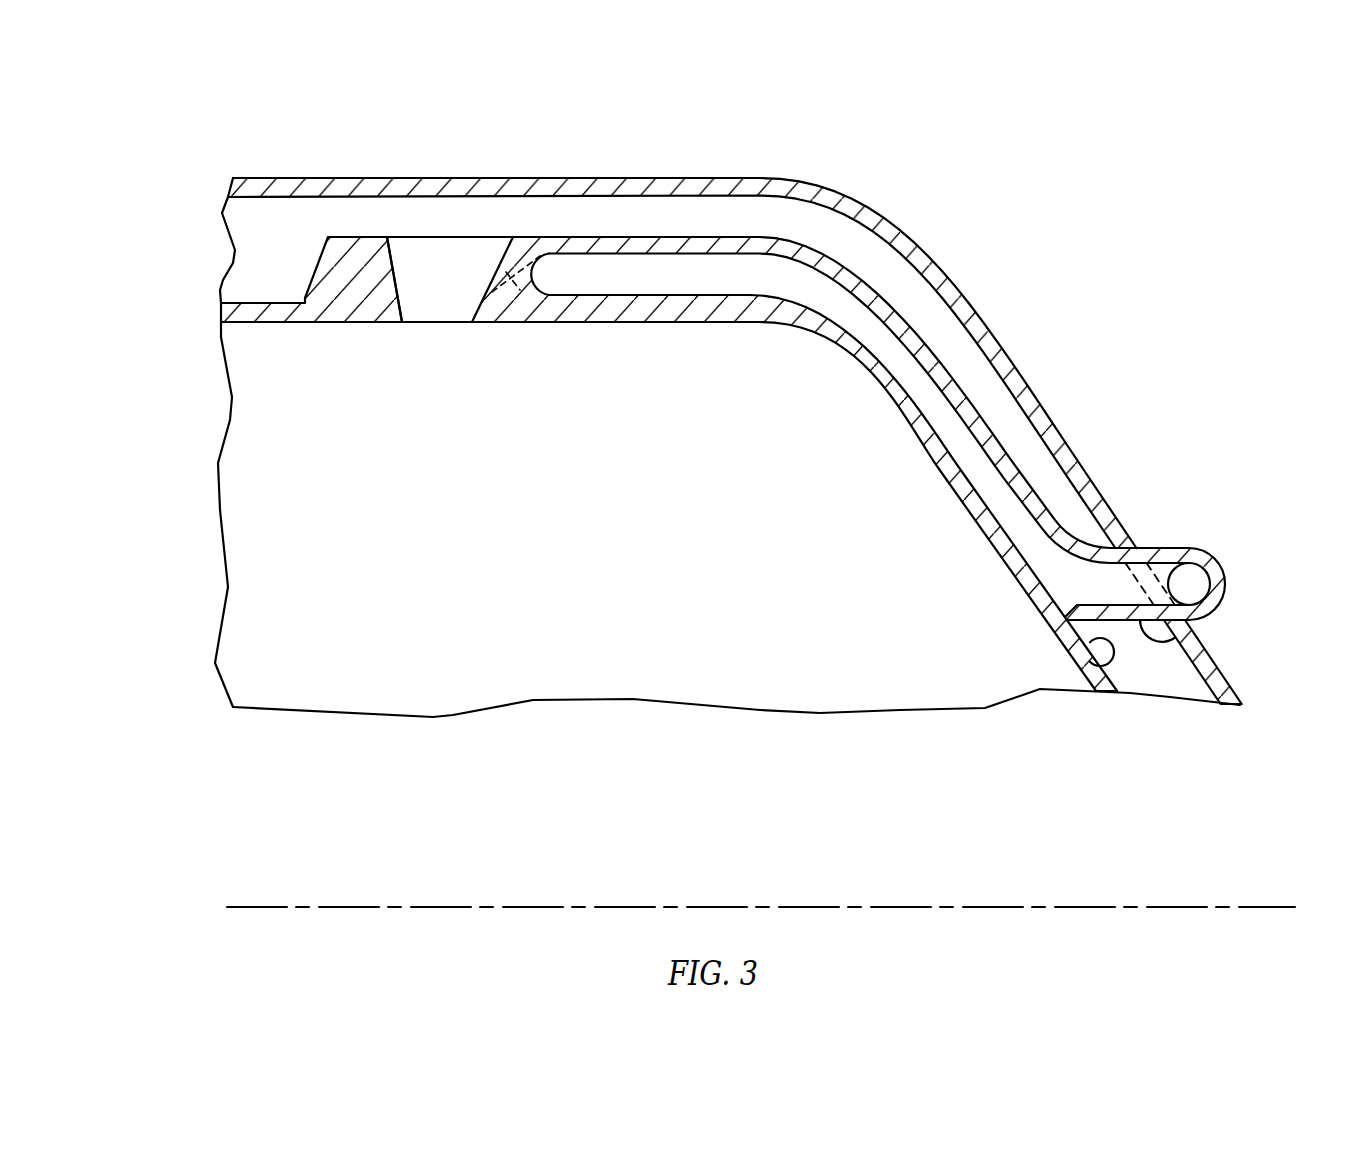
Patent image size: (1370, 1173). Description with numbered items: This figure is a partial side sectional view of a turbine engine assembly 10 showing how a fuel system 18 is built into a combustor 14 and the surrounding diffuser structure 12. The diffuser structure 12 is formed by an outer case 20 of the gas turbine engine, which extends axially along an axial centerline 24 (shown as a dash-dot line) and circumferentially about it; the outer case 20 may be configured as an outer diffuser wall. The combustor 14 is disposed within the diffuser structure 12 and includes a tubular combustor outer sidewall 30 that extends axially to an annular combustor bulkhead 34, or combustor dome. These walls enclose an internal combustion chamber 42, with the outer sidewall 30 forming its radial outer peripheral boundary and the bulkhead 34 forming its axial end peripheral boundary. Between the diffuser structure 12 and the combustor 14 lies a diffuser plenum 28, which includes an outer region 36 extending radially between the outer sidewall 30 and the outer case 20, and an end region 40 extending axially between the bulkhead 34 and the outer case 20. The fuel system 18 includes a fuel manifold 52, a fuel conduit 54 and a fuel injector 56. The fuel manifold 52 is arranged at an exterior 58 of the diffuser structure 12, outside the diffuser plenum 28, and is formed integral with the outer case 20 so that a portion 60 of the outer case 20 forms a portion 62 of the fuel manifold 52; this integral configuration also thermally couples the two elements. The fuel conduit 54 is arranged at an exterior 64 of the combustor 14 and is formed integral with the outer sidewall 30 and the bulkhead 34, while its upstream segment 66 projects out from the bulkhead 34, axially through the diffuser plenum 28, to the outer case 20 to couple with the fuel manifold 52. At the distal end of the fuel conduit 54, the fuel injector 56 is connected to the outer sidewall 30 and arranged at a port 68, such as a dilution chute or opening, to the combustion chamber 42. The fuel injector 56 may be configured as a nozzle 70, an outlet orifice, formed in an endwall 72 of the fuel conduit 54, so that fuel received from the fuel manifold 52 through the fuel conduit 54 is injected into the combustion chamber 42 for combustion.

The assembly 10 is at (243, 145).
The diffuser structure 12 is at (805, 170).
The combustor 14 is at (210, 398).
The fuel system 18 is at (1210, 516).
The outer case 20 is at (225, 187).
The axial centerline 24 is at (1275, 905).
The diffuser plenum 28 is at (230, 266).
The combustor outer sidewall 30 is at (205, 317).
The combustor bulkhead 34 is at (1115, 703).
The outer region 36 is at (259, 261).
The end region 40 is at (1145, 676).
The combustion chamber 42 is at (419, 566).
The fuel manifold 52 is at (1232, 580).
The fuel conduit 54 is at (978, 403).
The fuel injector 56 is at (490, 266).
The exterior of the diffuser structure 58 is at (1010, 345).
The portion of the outer case 60 is at (1146, 548).
The portion of the fuel manifold 62 is at (1139, 584).
The exterior of the combustor 64 is at (1090, 667).
The upstream segment 66 is at (1182, 641).
The port 68 is at (437, 302).
The nozzle 70 is at (506, 272).
The endwall 72 is at (488, 292).